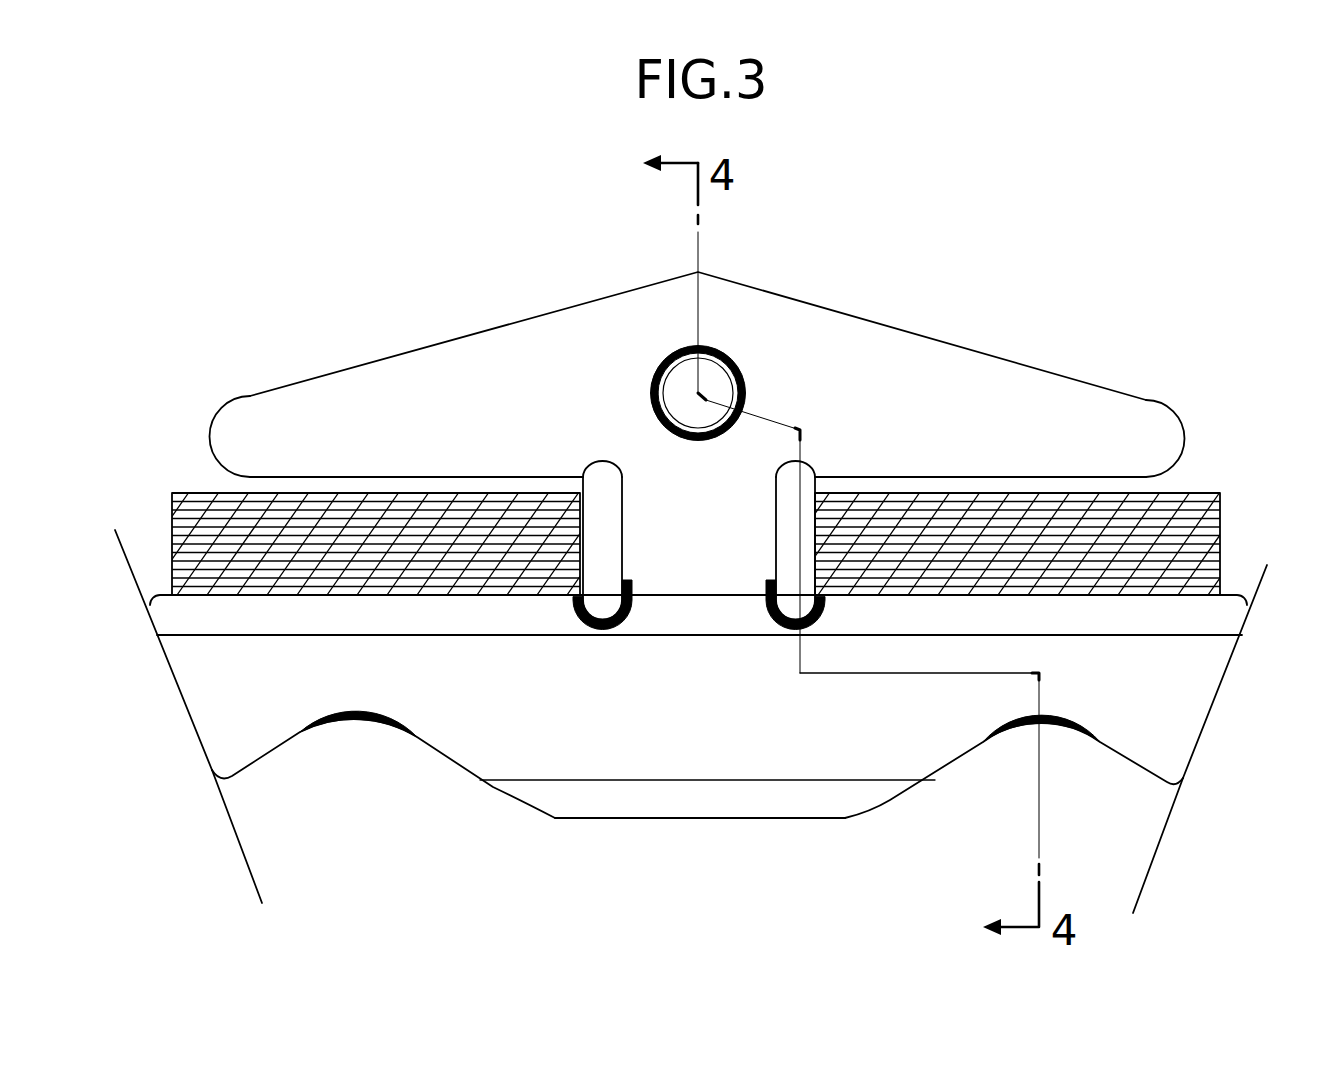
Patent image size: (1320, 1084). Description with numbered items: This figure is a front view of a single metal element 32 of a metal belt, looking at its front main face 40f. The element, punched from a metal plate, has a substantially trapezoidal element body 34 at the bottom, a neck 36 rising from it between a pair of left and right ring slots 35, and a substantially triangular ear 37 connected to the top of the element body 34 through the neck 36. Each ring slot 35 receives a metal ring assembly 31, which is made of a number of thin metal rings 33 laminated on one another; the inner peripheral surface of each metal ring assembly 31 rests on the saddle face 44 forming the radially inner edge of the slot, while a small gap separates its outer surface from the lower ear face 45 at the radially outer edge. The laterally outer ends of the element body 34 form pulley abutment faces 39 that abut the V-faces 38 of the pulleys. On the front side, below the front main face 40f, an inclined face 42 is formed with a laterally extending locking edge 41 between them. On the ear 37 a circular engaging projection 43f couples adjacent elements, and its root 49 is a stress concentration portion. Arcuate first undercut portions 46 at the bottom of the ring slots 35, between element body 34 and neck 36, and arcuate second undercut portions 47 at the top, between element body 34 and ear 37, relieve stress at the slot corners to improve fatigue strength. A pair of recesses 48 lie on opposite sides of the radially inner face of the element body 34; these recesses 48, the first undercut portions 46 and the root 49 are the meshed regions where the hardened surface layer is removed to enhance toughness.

The metal ring assembly 31 is at (226, 485).
The metal element 32 is at (1016, 328).
The metal ring 33 is at (282, 515).
The element body 34 is at (917, 753).
The ring slot 35 is at (410, 482).
The neck 36 is at (675, 563).
The ear 37 is at (835, 332).
The V-face 38 is at (232, 820).
The pulley abutment face 39 is at (173, 702).
The front main face 40f is at (735, 536).
The locking edge 41 is at (556, 636).
The inclined face 42 is at (738, 736).
The engaging projection 43f is at (722, 375).
The saddle face 44 is at (358, 580).
The lower ear face 45 is at (500, 480).
The first undercut portion 46 is at (590, 627).
The second undercut portion 47 is at (588, 463).
The recess 48 is at (349, 738).
The root of the engaging projection 49 is at (660, 363).